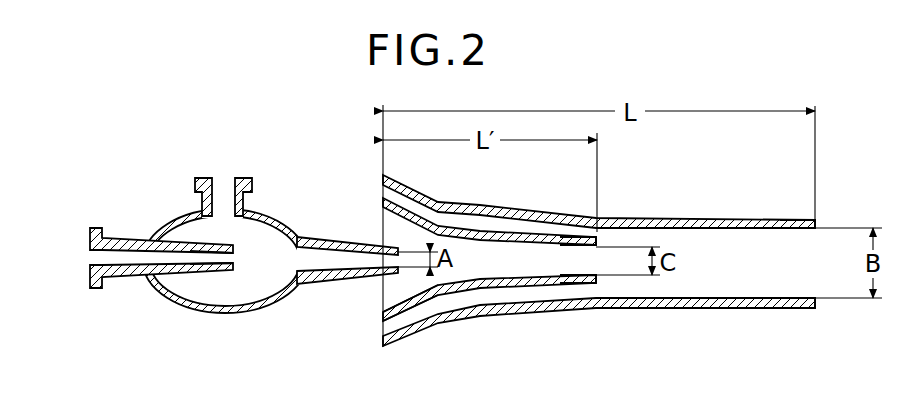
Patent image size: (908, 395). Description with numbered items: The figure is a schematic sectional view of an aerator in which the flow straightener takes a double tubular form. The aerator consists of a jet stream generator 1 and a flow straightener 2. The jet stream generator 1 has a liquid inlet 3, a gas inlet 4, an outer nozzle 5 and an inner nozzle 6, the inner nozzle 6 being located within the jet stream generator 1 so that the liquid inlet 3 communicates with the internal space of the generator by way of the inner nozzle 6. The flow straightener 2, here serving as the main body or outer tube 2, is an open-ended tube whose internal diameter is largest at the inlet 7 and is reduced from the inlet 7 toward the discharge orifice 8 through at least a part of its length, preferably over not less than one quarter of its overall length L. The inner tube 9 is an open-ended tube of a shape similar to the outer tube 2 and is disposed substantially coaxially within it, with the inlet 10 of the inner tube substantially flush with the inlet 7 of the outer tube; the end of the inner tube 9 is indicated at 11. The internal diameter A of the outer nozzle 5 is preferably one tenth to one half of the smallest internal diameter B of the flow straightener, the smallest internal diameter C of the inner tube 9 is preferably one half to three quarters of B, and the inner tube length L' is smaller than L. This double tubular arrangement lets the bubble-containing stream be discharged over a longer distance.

The jet stream generator 1 is at (249, 318).
The flow straightener 2 is at (678, 312).
The liquid inlet 3 is at (92, 255).
The gas inlet 4 is at (225, 190).
The outer nozzle 5 is at (390, 257).
The inner nozzle 6 is at (220, 262).
The inlet 7 is at (400, 320).
The discharge orifice 8 is at (787, 250).
The inner tube 9 is at (533, 232).
The inlet of the inner tube 10 is at (393, 290).
The outlet end of inner tube 11 is at (578, 257).